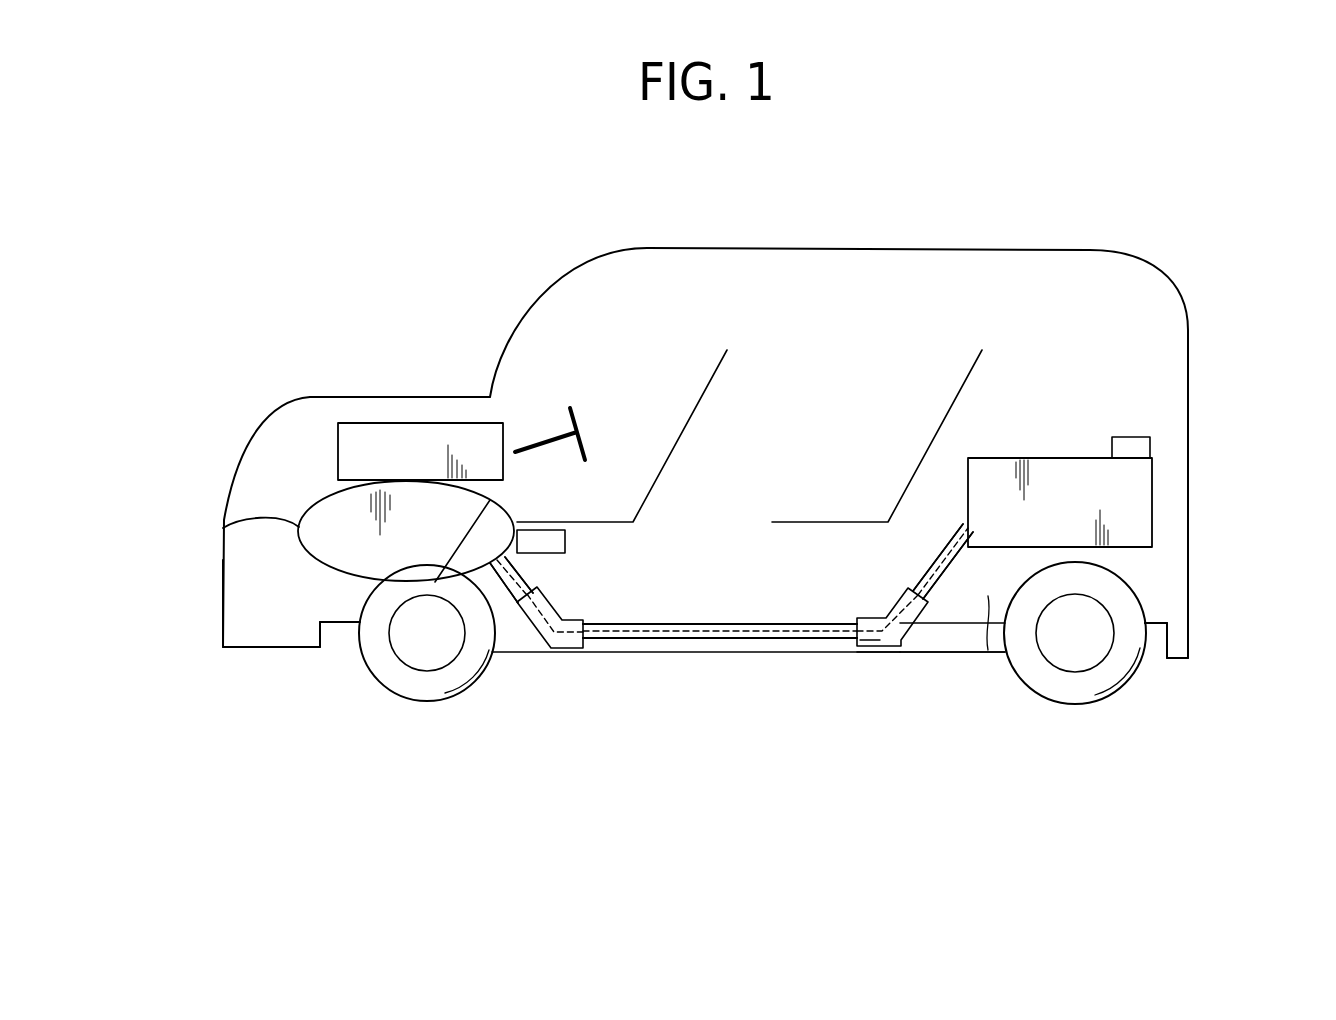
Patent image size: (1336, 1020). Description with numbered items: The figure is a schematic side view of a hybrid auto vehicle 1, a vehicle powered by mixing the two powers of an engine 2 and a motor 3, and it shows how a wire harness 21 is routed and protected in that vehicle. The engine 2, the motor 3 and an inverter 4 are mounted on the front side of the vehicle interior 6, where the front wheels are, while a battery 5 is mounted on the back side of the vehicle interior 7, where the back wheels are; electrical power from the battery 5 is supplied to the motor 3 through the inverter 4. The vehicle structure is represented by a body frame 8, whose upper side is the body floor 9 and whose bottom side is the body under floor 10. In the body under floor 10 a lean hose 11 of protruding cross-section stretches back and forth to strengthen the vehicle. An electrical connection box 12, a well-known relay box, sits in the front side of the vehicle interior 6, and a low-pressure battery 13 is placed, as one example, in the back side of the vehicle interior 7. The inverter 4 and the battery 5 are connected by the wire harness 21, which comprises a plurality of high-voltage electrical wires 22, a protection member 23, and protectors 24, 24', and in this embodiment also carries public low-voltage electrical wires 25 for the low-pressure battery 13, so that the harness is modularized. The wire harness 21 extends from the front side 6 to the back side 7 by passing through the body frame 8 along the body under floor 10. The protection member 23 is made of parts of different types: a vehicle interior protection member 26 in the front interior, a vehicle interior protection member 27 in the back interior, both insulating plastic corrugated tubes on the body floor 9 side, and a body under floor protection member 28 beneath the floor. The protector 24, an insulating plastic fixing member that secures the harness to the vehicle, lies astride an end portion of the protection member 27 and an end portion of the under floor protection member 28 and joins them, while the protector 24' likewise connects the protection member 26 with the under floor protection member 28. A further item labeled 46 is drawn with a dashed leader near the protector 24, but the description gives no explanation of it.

The hybrid auto vehicle 1 is at (1052, 208).
The engine 2 is at (390, 440).
The motor 3 is at (223, 528).
The inverter 4 is at (497, 512).
The battery 5 is at (1015, 477).
The front side of the vehicle interior 6 is at (258, 598).
The back side of the vehicle interior 7 is at (1173, 555).
The body frame 8 is at (990, 596).
The body floor 9 is at (945, 618).
The body under floor 10 is at (960, 640).
The lean hose 11 is at (910, 647).
The electrical connection box 12 is at (557, 545).
The low-pressure battery 13 is at (1140, 437).
The wire harness 21 is at (628, 656).
The high-voltage electrical wire 22 is at (792, 636).
The protection member 23 is at (452, 740).
The protector 24 is at (876, 602).
The protector 24' is at (548, 653).
The low-voltage electrical wire 25 is at (792, 636).
The vehicle interior protection member 26 is at (533, 577).
The vehicle interior protection member 27 is at (936, 560).
The body under floor protection member 28 is at (700, 638).
The bracket 46 is at (875, 648).